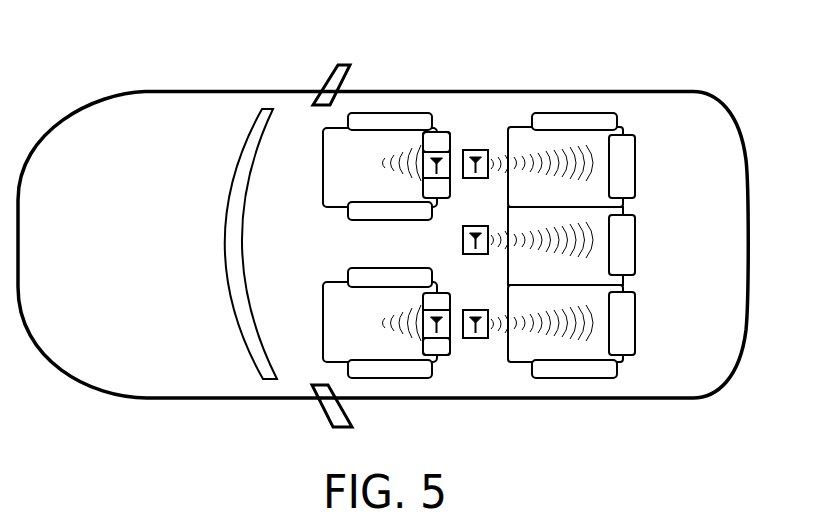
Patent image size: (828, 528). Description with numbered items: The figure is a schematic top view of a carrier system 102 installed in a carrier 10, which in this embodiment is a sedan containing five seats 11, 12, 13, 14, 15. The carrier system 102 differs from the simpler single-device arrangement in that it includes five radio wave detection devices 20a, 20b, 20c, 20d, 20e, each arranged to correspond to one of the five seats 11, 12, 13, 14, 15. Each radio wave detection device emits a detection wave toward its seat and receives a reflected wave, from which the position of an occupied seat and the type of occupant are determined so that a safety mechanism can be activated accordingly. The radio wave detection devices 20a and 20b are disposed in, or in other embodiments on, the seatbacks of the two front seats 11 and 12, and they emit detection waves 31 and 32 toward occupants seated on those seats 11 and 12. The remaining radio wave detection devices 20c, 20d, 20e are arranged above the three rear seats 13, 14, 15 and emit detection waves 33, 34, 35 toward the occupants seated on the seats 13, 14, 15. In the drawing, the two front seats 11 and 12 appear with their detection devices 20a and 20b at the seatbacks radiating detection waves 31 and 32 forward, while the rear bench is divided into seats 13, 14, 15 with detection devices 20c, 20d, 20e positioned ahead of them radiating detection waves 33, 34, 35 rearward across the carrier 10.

The carrier 10 is at (665, 101).
The seat 11 is at (444, 350).
The seat 12 is at (441, 133).
The seat 13 is at (628, 136).
The seat 14 is at (628, 220).
The seat 15 is at (627, 354).
The radio wave detection device 20a is at (433, 364).
The radio wave detection device 20b is at (437, 132).
The radio wave detection device 20c is at (486, 150).
The radio wave detection device 20d is at (462, 240).
The radio wave detection device 20e is at (484, 337).
The detection wave 31 is at (397, 343).
The detection wave 32 is at (397, 143).
The detection wave 33 is at (558, 150).
The detection wave 34 is at (558, 257).
The detection wave 35 is at (551, 337).
The carrier system 102 is at (193, 54).